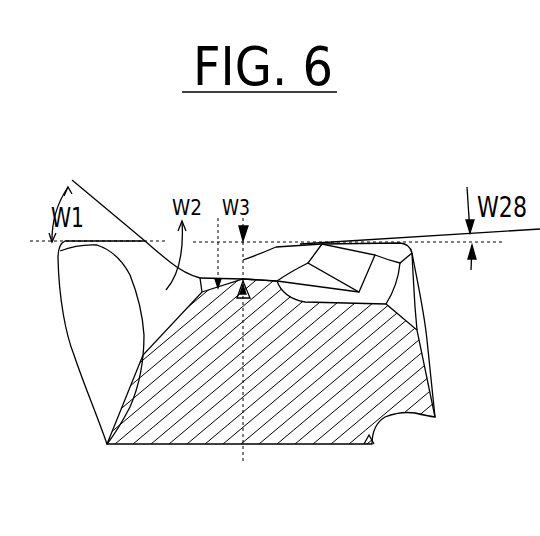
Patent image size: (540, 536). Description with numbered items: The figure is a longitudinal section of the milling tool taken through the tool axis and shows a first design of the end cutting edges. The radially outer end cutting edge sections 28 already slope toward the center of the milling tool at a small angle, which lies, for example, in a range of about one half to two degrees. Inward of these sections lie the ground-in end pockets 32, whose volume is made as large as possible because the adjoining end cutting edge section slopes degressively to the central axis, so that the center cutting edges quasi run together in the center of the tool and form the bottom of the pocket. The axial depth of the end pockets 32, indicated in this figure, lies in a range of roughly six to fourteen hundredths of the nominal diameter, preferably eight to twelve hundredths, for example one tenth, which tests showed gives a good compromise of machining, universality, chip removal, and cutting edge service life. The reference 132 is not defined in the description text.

The radially outer end cutting edge section 28 is at (112, 242).
The end pocket 32 is at (265, 233).
The top edge of cutting portion 132 is at (243, 260).